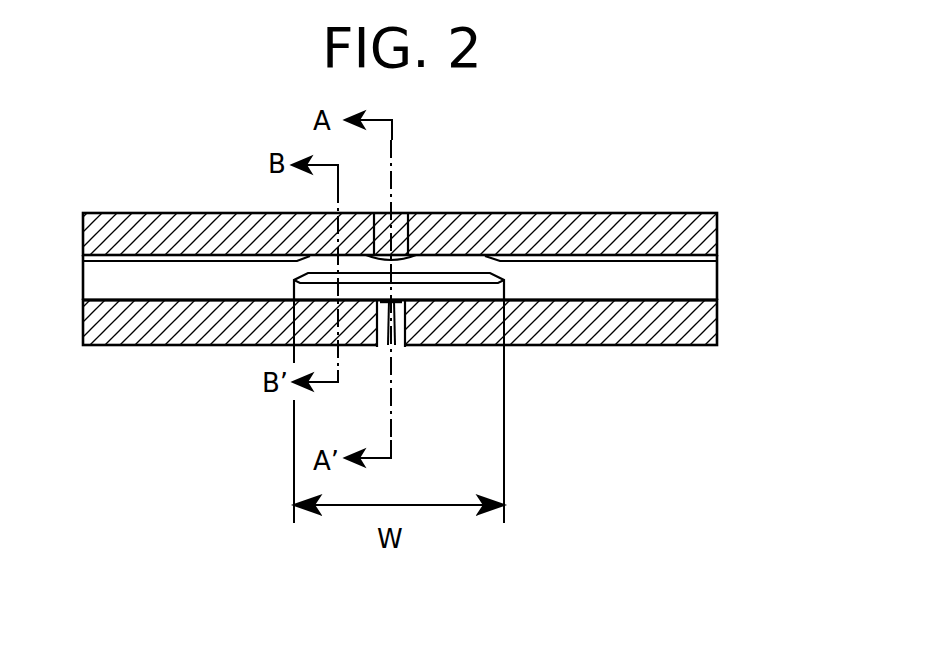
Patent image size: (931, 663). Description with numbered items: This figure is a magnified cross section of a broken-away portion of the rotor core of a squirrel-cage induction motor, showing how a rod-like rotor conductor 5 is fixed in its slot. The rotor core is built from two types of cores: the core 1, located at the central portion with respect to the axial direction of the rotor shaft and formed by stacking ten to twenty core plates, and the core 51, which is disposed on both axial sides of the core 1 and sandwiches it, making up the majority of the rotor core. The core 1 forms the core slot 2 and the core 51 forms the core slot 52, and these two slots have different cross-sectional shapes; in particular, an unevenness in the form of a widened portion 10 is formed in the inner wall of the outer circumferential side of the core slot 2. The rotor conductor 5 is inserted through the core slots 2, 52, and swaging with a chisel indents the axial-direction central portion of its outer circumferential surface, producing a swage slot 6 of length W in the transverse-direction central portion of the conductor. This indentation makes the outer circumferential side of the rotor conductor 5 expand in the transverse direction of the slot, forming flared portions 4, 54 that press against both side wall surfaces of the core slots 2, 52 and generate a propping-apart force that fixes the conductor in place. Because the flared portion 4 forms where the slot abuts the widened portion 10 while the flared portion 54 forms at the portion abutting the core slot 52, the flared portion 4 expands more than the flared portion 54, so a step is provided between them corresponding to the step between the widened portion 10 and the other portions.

The core 1 is at (405, 213).
The core slot 2 is at (377, 347).
The flared portion 4 is at (393, 303).
The rotor conductor 5 is at (577, 277).
The swage slot 6 is at (428, 272).
The widened portion 10 is at (405, 347).
The core 51 is at (258, 237).
The core slot 52 is at (678, 256).
The flared portion 54 is at (452, 295).